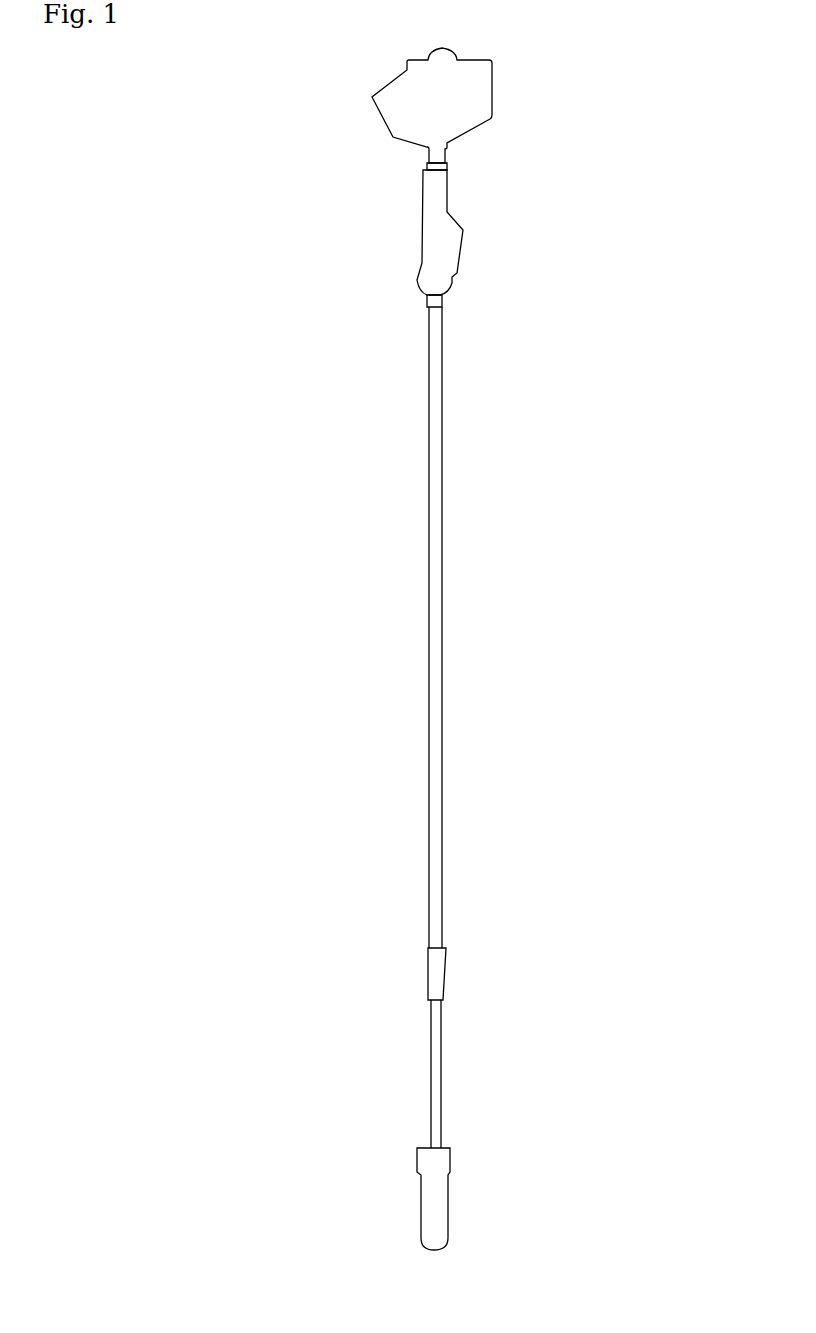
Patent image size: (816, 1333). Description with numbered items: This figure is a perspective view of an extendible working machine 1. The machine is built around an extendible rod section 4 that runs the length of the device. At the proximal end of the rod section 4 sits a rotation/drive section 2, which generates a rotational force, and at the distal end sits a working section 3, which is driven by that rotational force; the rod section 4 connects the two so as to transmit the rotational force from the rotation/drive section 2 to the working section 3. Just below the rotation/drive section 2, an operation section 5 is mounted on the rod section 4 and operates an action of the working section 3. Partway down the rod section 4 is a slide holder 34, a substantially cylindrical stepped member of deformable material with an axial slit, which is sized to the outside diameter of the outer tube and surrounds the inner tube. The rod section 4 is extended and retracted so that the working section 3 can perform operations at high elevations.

The extendible working machine 1 is at (328, 352).
The rotation/drive section 2 is at (450, 100).
The working section 3 is at (433, 1205).
The extendible rod section 4 is at (434, 650).
The operation section 5 is at (440, 246).
The slide holder 34 is at (447, 1003).